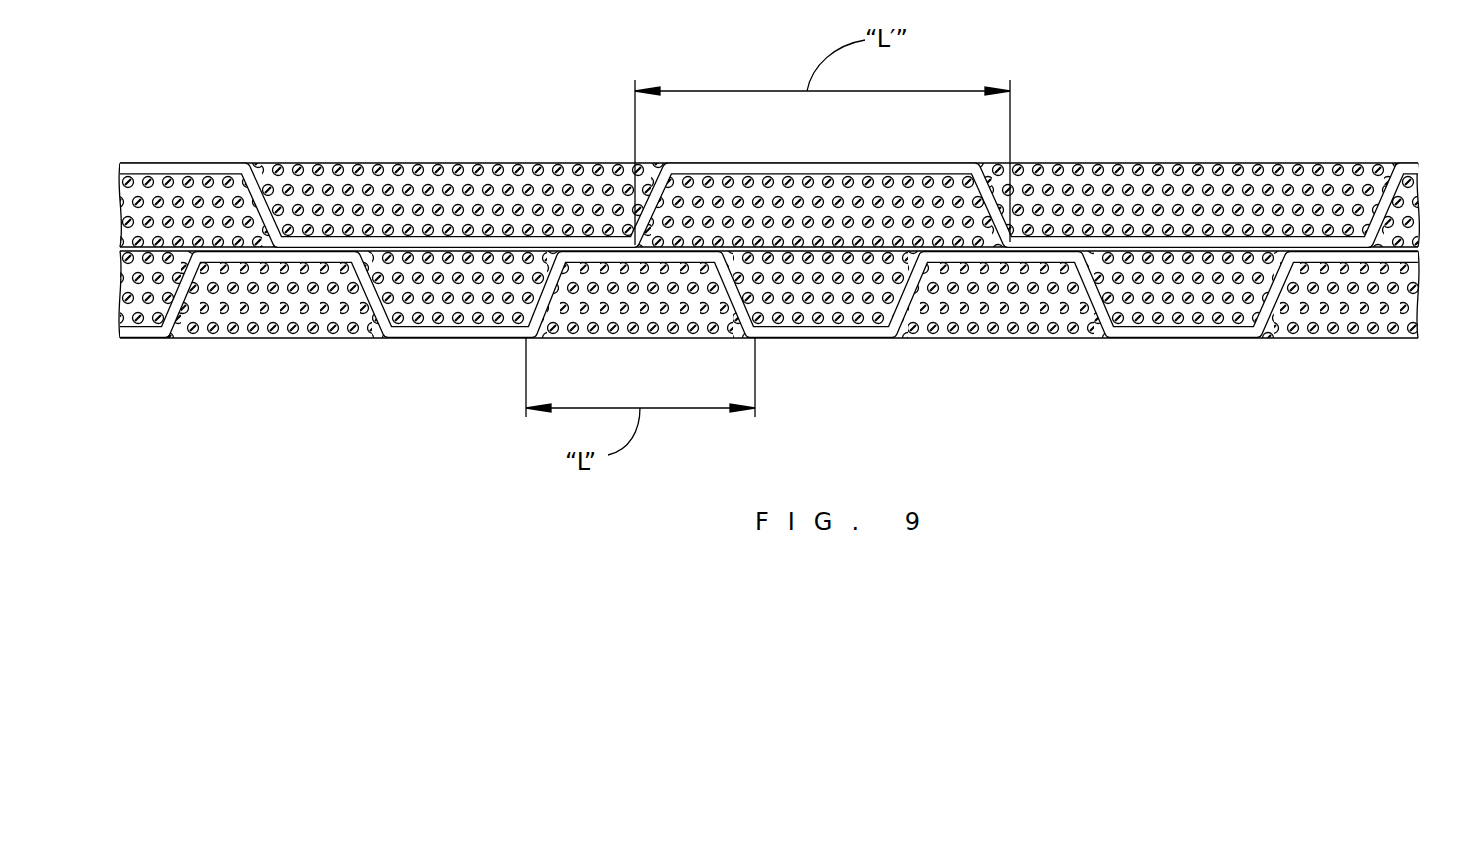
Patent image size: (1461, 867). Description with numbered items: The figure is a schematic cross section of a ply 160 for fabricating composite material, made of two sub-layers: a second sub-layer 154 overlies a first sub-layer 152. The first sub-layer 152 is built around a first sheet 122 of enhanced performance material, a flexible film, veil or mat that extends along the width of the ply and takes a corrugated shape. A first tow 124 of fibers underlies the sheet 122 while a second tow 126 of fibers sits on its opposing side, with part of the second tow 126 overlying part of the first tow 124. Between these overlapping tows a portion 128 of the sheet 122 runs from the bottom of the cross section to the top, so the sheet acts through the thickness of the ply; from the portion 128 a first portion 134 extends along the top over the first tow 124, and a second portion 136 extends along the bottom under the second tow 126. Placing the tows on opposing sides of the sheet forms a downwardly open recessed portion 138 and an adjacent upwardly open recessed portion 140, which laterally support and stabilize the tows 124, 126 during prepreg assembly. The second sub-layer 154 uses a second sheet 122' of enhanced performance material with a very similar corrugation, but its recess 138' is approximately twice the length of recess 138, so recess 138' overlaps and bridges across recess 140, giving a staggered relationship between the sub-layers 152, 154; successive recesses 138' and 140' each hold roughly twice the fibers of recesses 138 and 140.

The first sheet of enhanced performance material 122 is at (769, 212).
The second sheet of enhanced performance material 122' is at (769, 175).
The first tow of fibers 124 is at (659, 315).
The second tow of fibers 126 is at (834, 260).
The portion of first sheet 128 is at (715, 297).
The first portion of sheet 134 is at (566, 256).
The second portion of first sheet 136 is at (880, 338).
The recessed portion 138 is at (496, 323).
The recess of second sub-layer 138' is at (813, 180).
The recessed portion 140 is at (983, 233).
The recess of second sub-layer 140' is at (823, 131).
The first sub-layer 152 is at (776, 212).
The second sub-layer 154 is at (785, 131).
The ply 160 is at (785, 210).